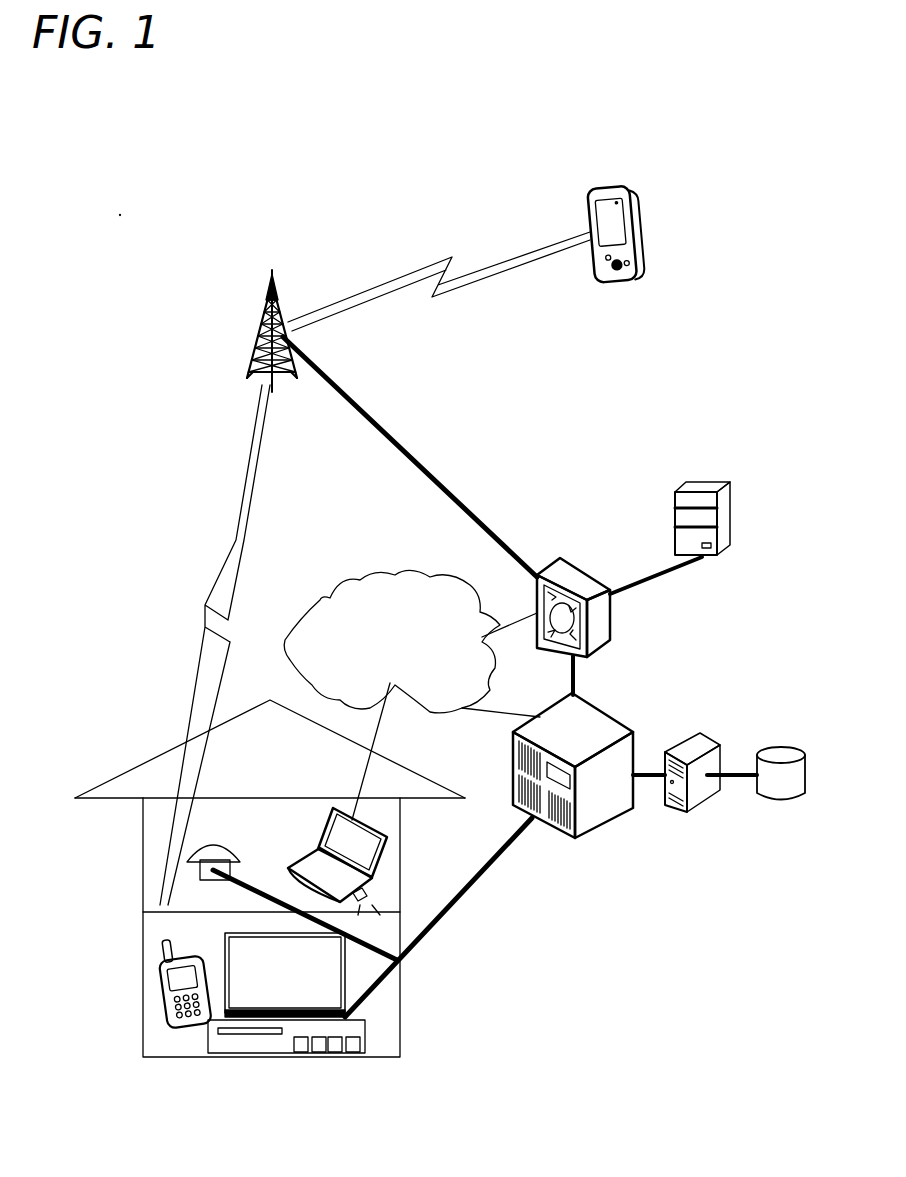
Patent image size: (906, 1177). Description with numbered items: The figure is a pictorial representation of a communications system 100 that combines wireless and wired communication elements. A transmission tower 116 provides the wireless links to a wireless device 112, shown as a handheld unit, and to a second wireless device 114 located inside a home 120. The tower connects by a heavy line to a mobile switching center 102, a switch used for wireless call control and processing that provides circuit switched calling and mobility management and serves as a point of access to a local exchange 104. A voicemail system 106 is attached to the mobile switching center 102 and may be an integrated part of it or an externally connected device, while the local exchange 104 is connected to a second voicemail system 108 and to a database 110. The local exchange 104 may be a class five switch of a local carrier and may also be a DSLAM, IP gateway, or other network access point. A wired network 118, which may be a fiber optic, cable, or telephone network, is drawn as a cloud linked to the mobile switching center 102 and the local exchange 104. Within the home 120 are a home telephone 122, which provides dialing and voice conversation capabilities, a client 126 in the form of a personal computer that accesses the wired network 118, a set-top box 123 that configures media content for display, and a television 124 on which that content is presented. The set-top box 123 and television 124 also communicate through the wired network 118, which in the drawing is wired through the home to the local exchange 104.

The communications system 100 is at (137, 221).
The mobile switching center 102 is at (560, 562).
The local exchange 104 is at (578, 840).
The voicemail system 106 is at (700, 505).
The voicemail system 108 is at (710, 793).
The database 110 is at (768, 748).
The wireless device 112 is at (640, 202).
The wireless device 114 is at (167, 1015).
The transmission tower 116 is at (258, 340).
The wired network 118 is at (378, 667).
The home 120 is at (134, 752).
The home telephone 122 is at (200, 872).
The set-top box 123 is at (358, 1040).
The television 124 is at (303, 982).
The client 126 is at (388, 870).